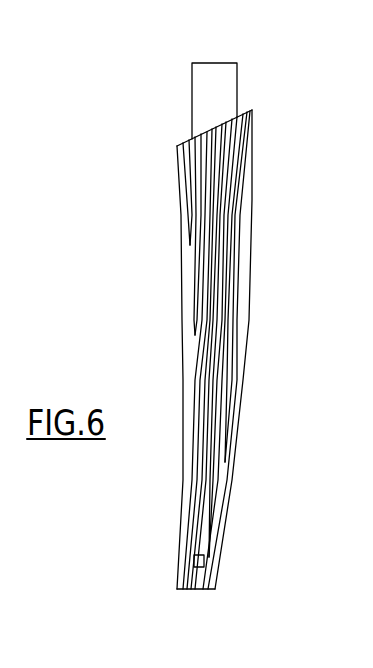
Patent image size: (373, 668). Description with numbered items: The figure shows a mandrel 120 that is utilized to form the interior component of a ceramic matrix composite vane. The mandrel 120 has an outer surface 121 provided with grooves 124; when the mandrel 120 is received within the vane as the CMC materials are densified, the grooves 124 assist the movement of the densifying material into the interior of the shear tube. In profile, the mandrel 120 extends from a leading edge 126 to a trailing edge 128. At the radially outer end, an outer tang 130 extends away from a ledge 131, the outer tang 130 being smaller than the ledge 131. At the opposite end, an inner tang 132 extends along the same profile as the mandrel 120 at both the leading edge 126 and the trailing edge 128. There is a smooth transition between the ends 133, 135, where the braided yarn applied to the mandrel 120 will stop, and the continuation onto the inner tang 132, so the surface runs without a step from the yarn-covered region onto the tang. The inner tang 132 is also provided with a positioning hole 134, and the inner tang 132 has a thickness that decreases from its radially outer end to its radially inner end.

The mandrel 120 is at (274, 256).
The outer tang 130 is at (228, 93).
The ledge 131 is at (186, 145).
The grooves 124 is at (187, 158).
The outer surface 121 is at (183, 262).
The leading edge 126 is at (185, 363).
The trailing edge 128 is at (246, 358).
The end 133 is at (182, 556).
The end 135 is at (218, 554).
The positioning hole 134 is at (194, 556).
The inner tang 132 is at (182, 577).